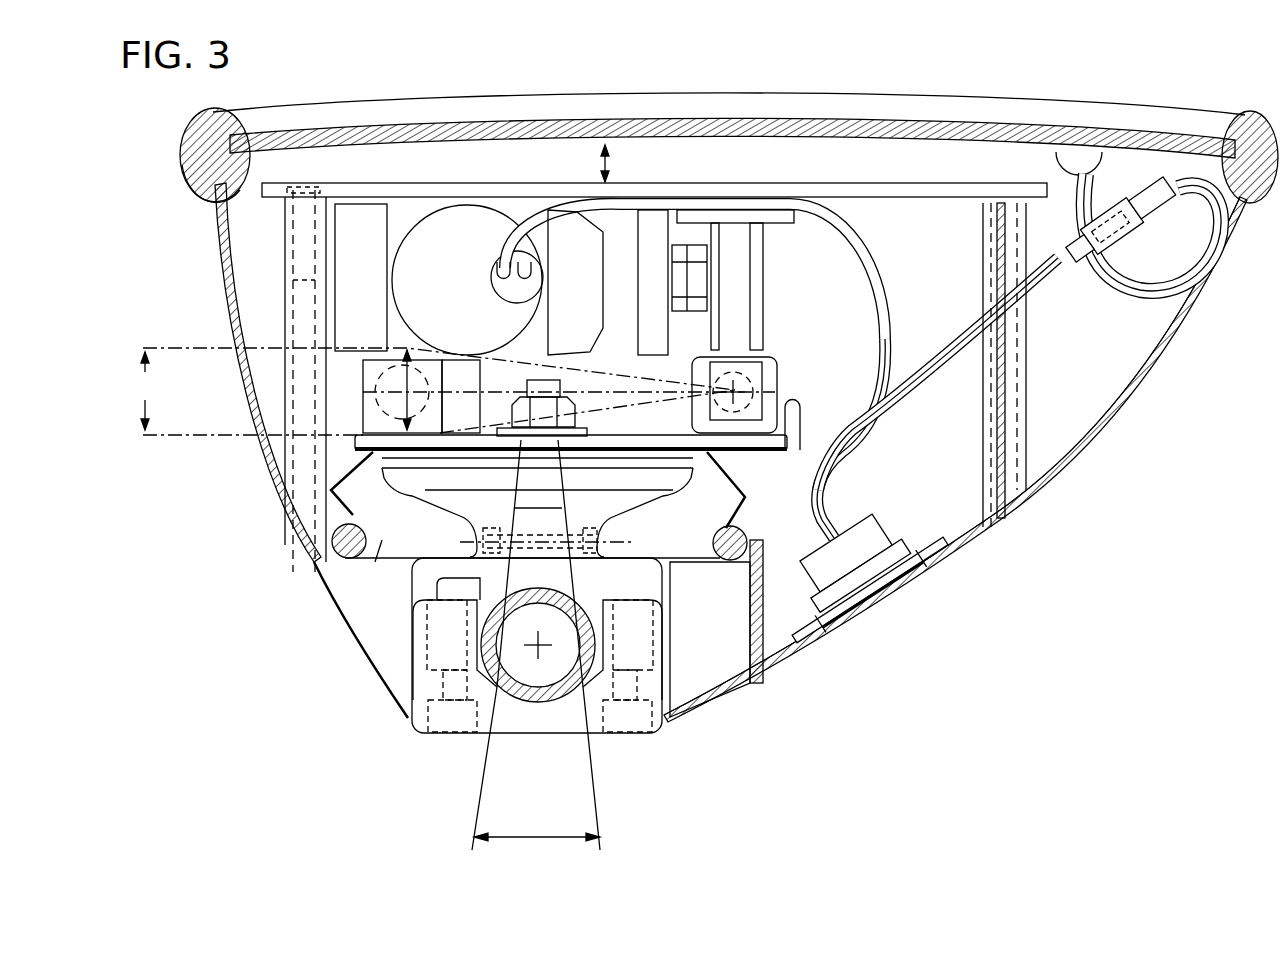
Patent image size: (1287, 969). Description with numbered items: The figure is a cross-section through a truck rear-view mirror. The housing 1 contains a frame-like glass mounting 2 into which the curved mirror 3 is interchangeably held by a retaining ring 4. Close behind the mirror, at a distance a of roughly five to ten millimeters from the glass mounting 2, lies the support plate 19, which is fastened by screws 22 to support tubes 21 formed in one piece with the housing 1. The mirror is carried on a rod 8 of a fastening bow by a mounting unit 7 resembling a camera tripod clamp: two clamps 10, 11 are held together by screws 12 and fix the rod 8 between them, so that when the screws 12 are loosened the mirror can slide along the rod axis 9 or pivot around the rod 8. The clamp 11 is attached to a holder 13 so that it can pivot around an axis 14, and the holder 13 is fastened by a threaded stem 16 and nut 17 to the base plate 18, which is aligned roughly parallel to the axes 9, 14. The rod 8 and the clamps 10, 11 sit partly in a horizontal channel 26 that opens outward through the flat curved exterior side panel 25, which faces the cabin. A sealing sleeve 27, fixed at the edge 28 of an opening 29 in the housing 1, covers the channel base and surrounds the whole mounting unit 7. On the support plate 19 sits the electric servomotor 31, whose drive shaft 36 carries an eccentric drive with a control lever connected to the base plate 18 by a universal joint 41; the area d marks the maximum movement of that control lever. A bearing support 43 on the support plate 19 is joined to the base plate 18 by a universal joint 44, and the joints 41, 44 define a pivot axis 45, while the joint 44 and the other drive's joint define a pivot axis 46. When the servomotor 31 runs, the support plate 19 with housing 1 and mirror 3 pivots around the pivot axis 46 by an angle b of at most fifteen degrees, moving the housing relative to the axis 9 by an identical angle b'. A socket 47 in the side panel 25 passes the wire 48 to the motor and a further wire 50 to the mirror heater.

The housing 1 is at (1165, 366).
The glass mounting 2 is at (205, 168).
The curved mirror 3 is at (360, 124).
The retaining ring 4 is at (200, 128).
The mounting unit 7 is at (412, 741).
The rod 8 is at (538, 702).
The rod axis 9 is at (541, 642).
The clamp 10 is at (420, 627).
The clamp 11 is at (482, 587).
The screws 12 is at (625, 718).
The holder 13 is at (670, 477).
The pivot axis 14 is at (567, 532).
The threaded stem 16 is at (547, 383).
The nut 17 is at (572, 397).
The base plate 18 is at (770, 442).
The support plate 19 is at (908, 197).
The support tubes 21 is at (285, 290).
The screws 22 is at (300, 250).
The flat curved exterior side panel 25 is at (1100, 427).
The horizontal channel 26 is at (713, 635).
The sealing sleeve 27 is at (331, 492).
The edge 28 is at (333, 543).
The opening 29 is at (382, 540).
The electric servomotor 31 is at (457, 200).
The drive shaft 36 is at (690, 278).
The universal joint 41 is at (430, 372).
The bearing support 43 is at (757, 245).
The universal joint 44 is at (770, 367).
The pivot axis 45 is at (459, 391).
The pivot axis 46 is at (748, 383).
The socket 47 is at (893, 603).
The circuit path 48 is at (857, 243).
The wire 50 is at (1138, 172).
The distance a is at (614, 163).
The angle b is at (382, 392).
The angle b' is at (537, 836).
The maximum area of movement d is at (146, 391).